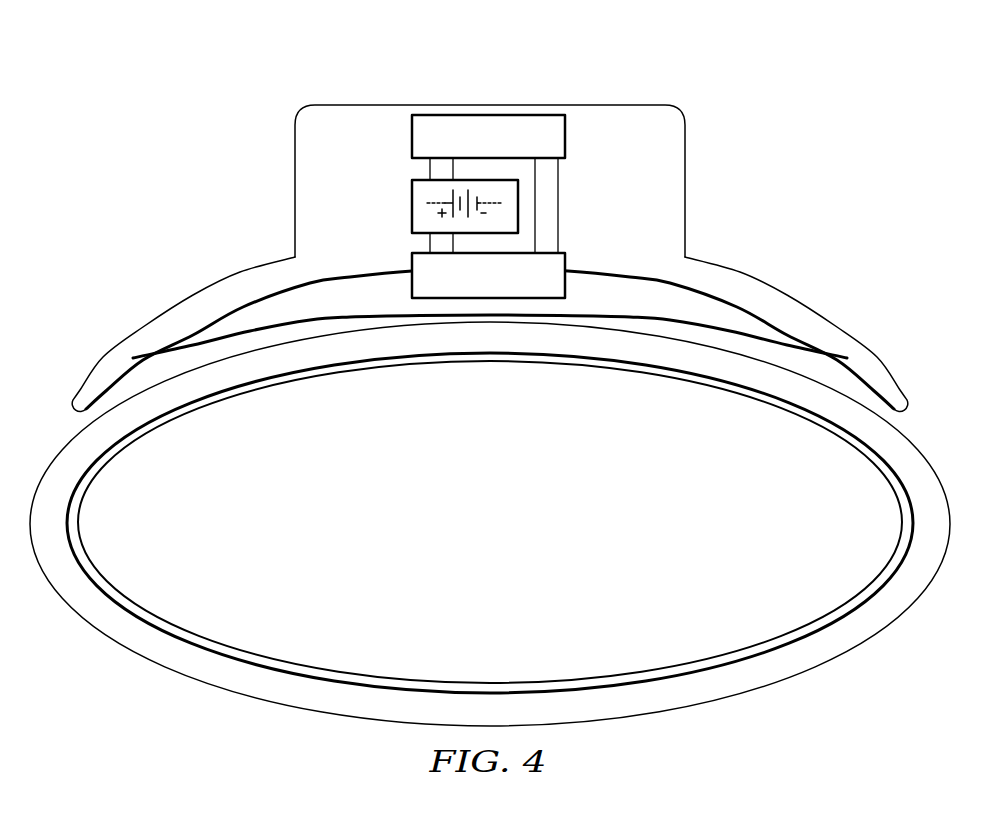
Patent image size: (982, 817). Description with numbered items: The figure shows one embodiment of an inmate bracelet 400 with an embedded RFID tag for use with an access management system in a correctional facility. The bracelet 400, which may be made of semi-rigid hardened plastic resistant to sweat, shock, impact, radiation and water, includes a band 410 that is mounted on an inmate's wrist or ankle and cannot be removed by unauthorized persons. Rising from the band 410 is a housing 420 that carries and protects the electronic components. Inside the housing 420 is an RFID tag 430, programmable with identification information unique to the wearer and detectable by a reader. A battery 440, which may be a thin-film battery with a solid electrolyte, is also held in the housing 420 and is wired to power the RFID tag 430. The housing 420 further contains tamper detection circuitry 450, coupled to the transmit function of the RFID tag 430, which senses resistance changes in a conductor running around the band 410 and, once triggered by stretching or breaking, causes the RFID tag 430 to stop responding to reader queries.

The inmate bracelet 400 is at (768, 62).
The band 410 is at (198, 643).
The housing 420 is at (360, 105).
The RFID tag 430 is at (488, 115).
The battery 440 is at (412, 205).
The tamper detection circuitry 450 is at (567, 267).